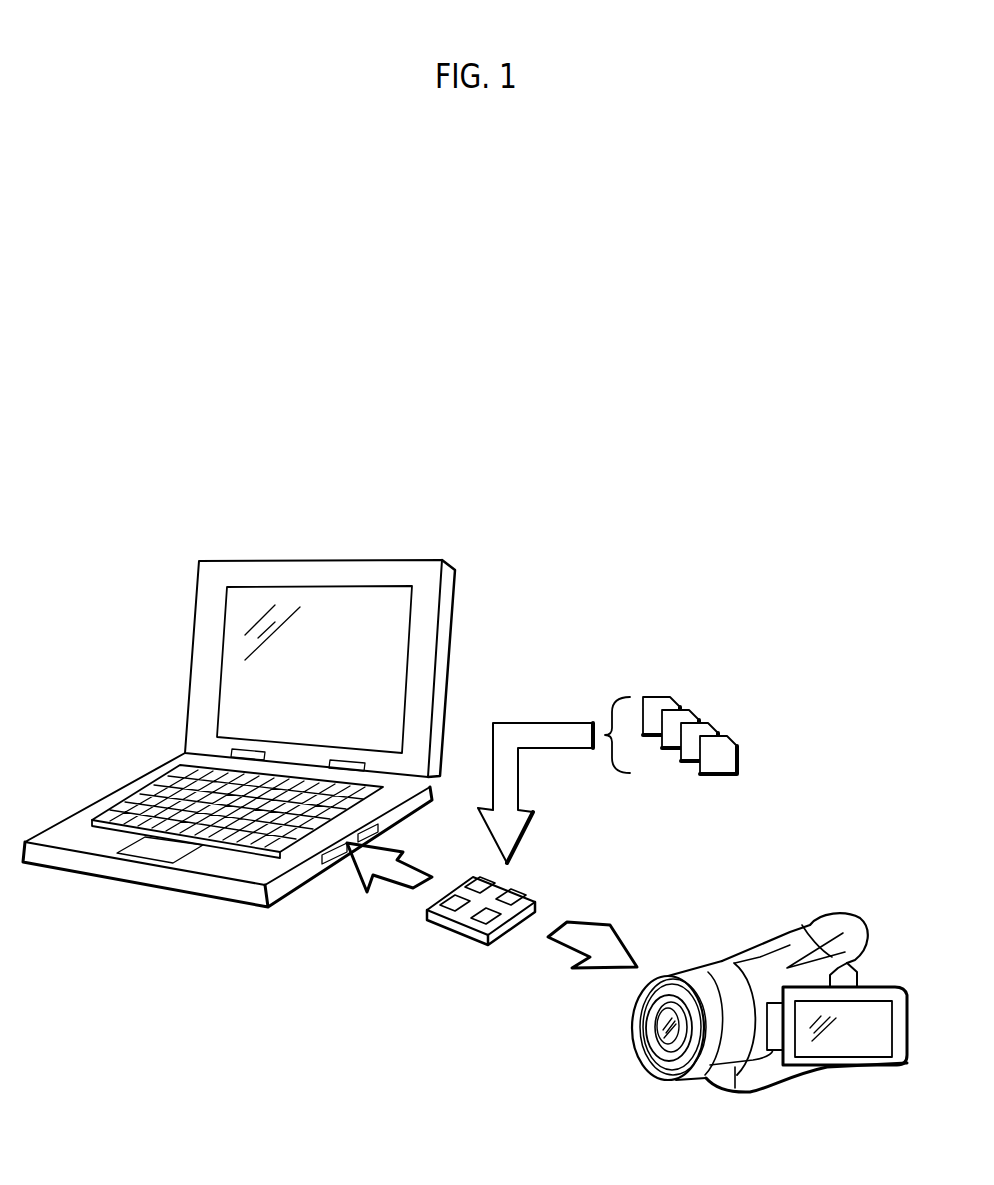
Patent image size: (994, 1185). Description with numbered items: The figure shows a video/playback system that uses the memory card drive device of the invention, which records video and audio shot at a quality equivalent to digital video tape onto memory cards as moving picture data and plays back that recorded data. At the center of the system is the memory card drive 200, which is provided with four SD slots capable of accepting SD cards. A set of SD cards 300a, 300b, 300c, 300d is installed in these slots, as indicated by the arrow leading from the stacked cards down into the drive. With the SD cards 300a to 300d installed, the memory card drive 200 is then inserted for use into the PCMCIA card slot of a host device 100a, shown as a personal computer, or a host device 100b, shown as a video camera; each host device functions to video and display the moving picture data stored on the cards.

The host device 100a is at (325, 562).
The host device 100b is at (837, 910).
The memory card drive 200 is at (457, 927).
The SD card 300a is at (667, 697).
The SD card 300b is at (689, 715).
The SD card 300c is at (706, 720).
The SD card 300d is at (735, 747).